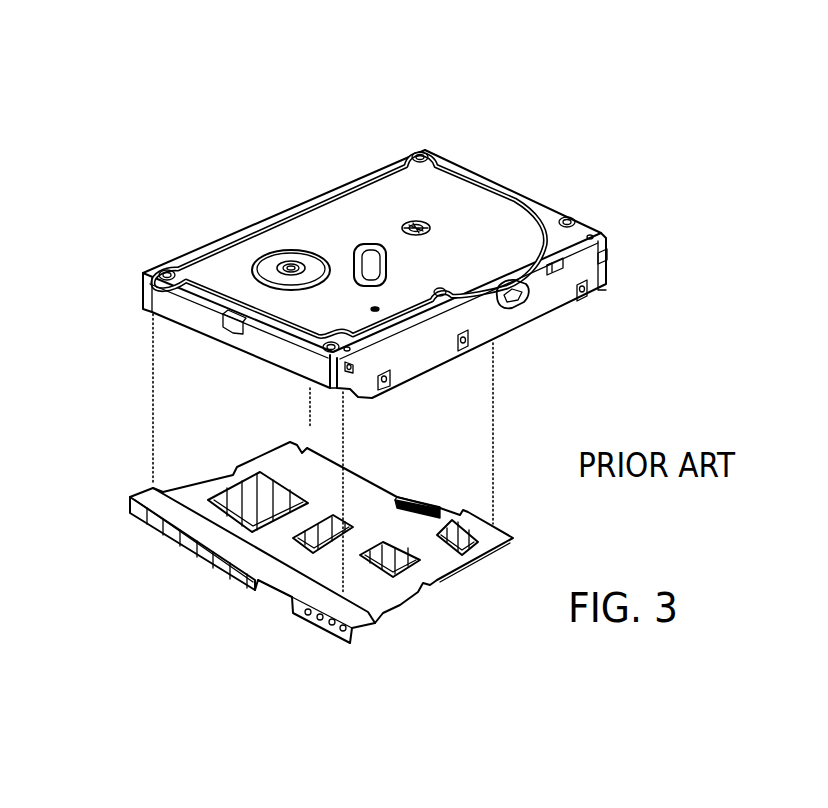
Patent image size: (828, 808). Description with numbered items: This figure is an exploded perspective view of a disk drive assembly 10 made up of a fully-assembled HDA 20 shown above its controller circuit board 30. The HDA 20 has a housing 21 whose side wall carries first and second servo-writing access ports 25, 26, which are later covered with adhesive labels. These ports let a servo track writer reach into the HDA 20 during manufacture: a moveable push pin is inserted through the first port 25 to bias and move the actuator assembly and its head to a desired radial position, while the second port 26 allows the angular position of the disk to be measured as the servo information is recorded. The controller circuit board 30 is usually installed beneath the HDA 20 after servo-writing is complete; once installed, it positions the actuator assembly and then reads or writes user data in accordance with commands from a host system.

The disk drive assembly 10 is at (162, 182).
The HDA 20 is at (514, 192).
The drive housing 21 is at (598, 274).
The first access port 25 is at (372, 250).
The second access port 26 is at (520, 300).
The controller circuit board 30 is at (387, 588).